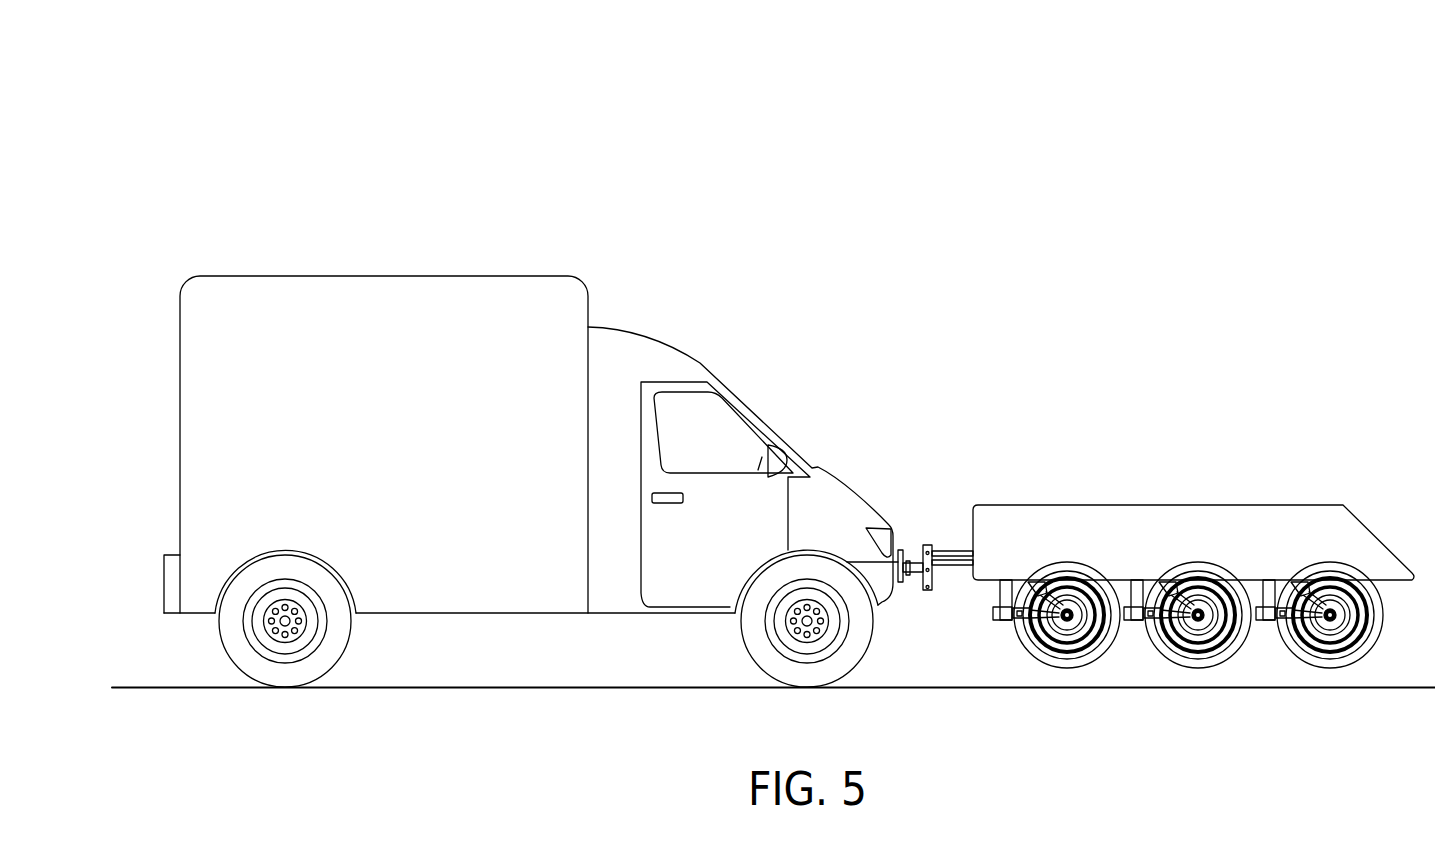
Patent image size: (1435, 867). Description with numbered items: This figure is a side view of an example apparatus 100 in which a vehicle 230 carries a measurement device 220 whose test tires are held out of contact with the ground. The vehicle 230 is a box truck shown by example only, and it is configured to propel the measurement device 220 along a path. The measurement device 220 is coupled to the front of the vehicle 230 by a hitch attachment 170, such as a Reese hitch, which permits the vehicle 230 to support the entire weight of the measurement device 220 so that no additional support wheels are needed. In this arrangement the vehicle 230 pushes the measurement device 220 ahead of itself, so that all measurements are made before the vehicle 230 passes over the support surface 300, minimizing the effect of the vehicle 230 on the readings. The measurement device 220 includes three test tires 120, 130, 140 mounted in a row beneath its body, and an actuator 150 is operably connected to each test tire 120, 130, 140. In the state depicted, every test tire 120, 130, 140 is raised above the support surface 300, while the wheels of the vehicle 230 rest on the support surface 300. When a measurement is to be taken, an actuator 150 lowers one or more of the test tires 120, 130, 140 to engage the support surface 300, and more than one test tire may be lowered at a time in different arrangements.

The apparatus 100 is at (771, 406).
The vehicle 230 is at (531, 422).
The measurement device 220 is at (1193, 567).
The hitch attachment 170 is at (935, 517).
The actuator 150 is at (1167, 539).
The test tire 120 is at (1067, 674).
The test tire 130 is at (1198, 674).
The test tire 140 is at (1330, 674).
The support surface 300 is at (765, 626).